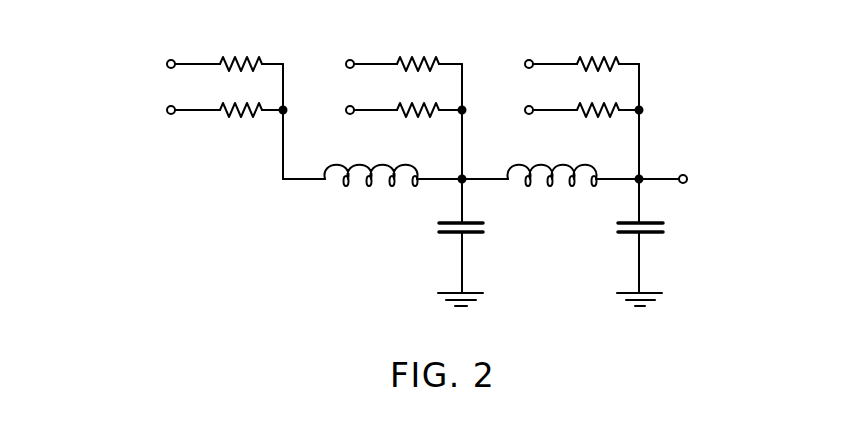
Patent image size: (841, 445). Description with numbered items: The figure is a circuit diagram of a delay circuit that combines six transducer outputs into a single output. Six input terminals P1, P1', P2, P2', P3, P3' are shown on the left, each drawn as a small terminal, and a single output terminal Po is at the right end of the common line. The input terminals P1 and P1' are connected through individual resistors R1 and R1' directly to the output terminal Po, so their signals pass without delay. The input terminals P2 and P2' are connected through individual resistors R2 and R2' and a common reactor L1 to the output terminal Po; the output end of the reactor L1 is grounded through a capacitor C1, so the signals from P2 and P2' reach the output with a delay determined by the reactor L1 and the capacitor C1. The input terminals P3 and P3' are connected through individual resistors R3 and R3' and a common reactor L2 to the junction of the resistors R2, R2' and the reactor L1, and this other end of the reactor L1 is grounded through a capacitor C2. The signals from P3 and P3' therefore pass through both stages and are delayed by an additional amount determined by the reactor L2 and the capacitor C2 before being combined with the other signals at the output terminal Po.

The input terminal P3 is at (176, 48).
The input terminal P3' is at (176, 95).
The resistor R3 is at (251, 38).
The resistor R3' is at (245, 136).
The input terminal P2 is at (358, 44).
The input terminal P2' is at (356, 95).
The resistor R2 is at (431, 38).
The resistor R2' is at (423, 133).
The input terminal P1 is at (537, 41).
The input terminal P1' is at (530, 95).
The resistor R1 is at (615, 41).
The resistor R1' is at (590, 134).
The reactor L2 is at (365, 188).
The reactor L1 is at (555, 190).
The capacitor C2 is at (437, 235).
The capacitor C1 is at (615, 230).
The output terminal Po is at (688, 177).